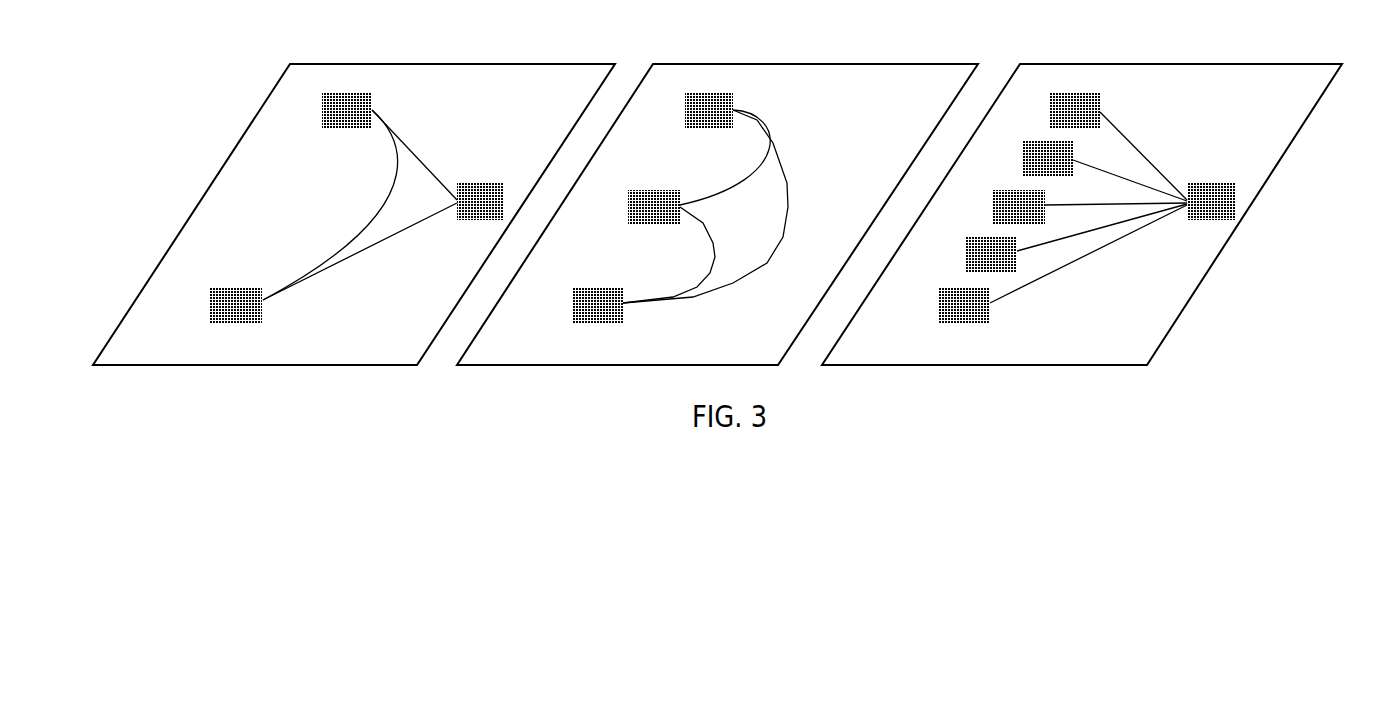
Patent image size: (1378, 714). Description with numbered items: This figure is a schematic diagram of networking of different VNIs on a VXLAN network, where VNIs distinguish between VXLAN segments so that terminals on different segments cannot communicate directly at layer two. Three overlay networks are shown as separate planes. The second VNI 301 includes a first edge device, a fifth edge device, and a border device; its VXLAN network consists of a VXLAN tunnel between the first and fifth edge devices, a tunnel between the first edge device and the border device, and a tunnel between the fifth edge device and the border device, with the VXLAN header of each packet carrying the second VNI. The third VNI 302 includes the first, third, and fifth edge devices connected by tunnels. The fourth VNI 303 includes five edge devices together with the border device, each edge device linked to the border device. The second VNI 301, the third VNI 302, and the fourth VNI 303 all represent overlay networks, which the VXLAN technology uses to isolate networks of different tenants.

The second VNI 301 is at (385, 365).
The third VNI 302 is at (765, 365).
The fourth VNI 303 is at (1123, 365).